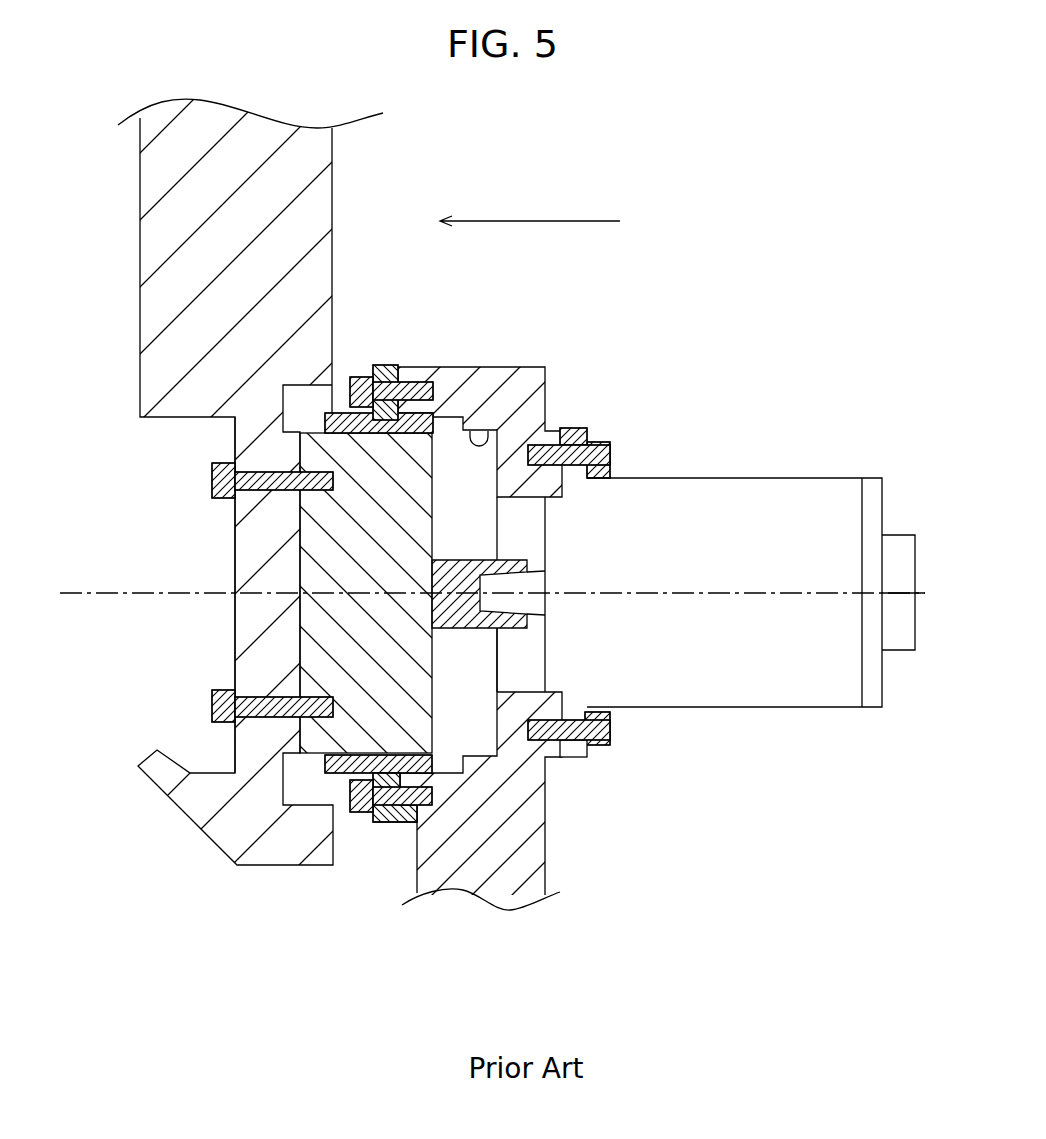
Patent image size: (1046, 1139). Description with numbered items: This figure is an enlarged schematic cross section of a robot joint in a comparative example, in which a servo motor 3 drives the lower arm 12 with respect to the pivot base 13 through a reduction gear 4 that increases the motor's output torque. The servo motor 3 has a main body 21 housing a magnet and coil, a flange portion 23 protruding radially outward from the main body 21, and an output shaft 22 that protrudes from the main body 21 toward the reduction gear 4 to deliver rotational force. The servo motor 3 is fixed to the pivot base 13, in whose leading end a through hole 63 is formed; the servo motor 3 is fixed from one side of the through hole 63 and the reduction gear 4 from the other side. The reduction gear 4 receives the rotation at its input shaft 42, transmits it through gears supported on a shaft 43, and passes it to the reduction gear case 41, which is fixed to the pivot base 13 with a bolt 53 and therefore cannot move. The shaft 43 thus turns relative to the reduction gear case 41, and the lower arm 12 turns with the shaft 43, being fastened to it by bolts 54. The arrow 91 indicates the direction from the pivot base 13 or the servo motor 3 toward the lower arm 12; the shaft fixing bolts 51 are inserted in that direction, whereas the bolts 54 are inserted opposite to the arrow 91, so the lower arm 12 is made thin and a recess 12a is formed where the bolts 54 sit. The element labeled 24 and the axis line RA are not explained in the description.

The lower arm 12 is at (183, 241).
The recess 12a is at (157, 420).
The bolts 54 is at (212, 486).
The reduction gear 4 is at (300, 567).
The reduction gear case 41 is at (345, 412).
The bolt 53 is at (410, 375).
The through hole 63 is at (480, 428).
The flange portion 23 is at (575, 436).
The nut 24 is at (612, 453).
The servo motor 3 is at (862, 478).
The main body 21 is at (767, 532).
The rotation axis RA is at (923, 592).
The output shaft 22 is at (547, 603).
The input shaft 42 is at (465, 617).
The shaft 43 is at (312, 733).
The shaft fixing bolts 51 is at (385, 815).
The pivot base 13 is at (463, 882).
The arrow 91 is at (528, 221).